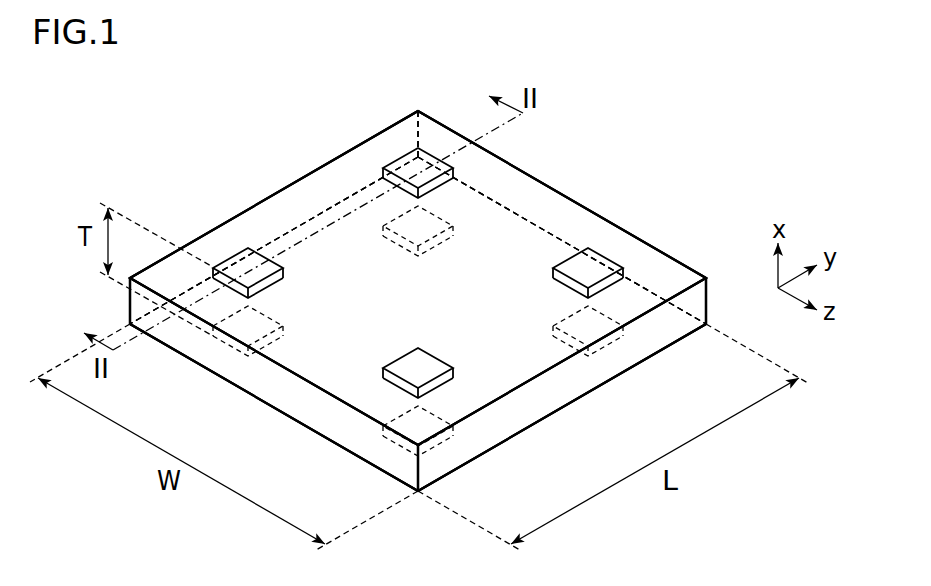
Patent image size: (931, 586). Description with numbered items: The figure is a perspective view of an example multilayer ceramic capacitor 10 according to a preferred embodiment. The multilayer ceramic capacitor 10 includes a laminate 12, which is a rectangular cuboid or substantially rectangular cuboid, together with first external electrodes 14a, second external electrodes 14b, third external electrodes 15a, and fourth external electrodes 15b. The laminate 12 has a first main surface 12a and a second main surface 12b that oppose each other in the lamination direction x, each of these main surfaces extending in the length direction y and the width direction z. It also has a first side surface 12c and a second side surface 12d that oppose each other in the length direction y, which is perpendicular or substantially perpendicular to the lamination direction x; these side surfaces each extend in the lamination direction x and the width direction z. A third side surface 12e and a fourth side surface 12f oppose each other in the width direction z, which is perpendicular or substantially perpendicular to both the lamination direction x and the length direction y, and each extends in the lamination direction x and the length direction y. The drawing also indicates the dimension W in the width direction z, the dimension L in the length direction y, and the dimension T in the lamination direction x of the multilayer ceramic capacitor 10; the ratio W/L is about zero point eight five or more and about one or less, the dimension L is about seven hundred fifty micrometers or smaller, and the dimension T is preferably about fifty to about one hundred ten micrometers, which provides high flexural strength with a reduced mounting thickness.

The multilayer ceramic capacitor 10 is at (203, 122).
The laminate 12 is at (677, 344).
The first main surface 12a is at (323, 368).
The second main surface 12b is at (525, 248).
The first side surface 12c is at (513, 187).
The second side surface 12d is at (325, 413).
The third side surface 12e is at (275, 212).
The fourth side surface 12f is at (548, 392).
The first external electrodes 14a is at (410, 165).
The second external electrodes 14b is at (434, 381).
The third external electrodes 15a is at (590, 262).
The fourth external electrodes 15b is at (238, 270).